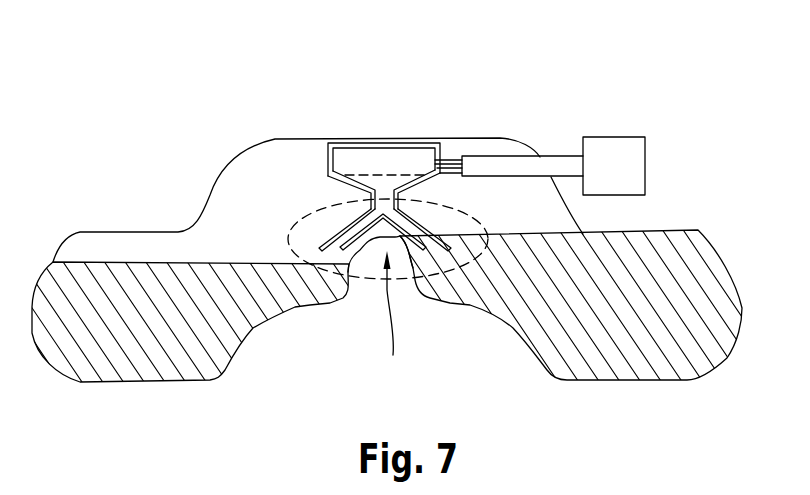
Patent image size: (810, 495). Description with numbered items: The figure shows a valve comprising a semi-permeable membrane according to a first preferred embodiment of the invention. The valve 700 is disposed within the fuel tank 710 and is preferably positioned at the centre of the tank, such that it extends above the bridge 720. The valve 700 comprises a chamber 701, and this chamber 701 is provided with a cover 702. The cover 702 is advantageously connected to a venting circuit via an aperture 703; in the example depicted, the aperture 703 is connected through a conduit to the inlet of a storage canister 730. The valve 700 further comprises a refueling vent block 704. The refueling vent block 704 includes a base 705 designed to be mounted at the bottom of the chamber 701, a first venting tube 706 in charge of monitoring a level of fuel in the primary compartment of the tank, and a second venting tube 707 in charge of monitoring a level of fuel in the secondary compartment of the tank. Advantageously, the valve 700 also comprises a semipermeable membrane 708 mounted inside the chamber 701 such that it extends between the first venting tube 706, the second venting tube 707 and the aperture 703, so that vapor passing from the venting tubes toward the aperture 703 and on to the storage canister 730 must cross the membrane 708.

The valve 700 is at (403, 99).
The chamber 701 is at (381, 160).
The cover 702 is at (420, 142).
The aperture 703 is at (447, 152).
The refueling vent block 704 is at (277, 226).
The base 705 is at (369, 204).
The first venting tube 706 is at (407, 245).
The second venting tube 707 is at (366, 240).
The semipermeable membrane 708 is at (359, 162).
The fuel tank 710 is at (705, 224).
The bridge 720 is at (393, 316).
The storage canister 730 is at (624, 145).